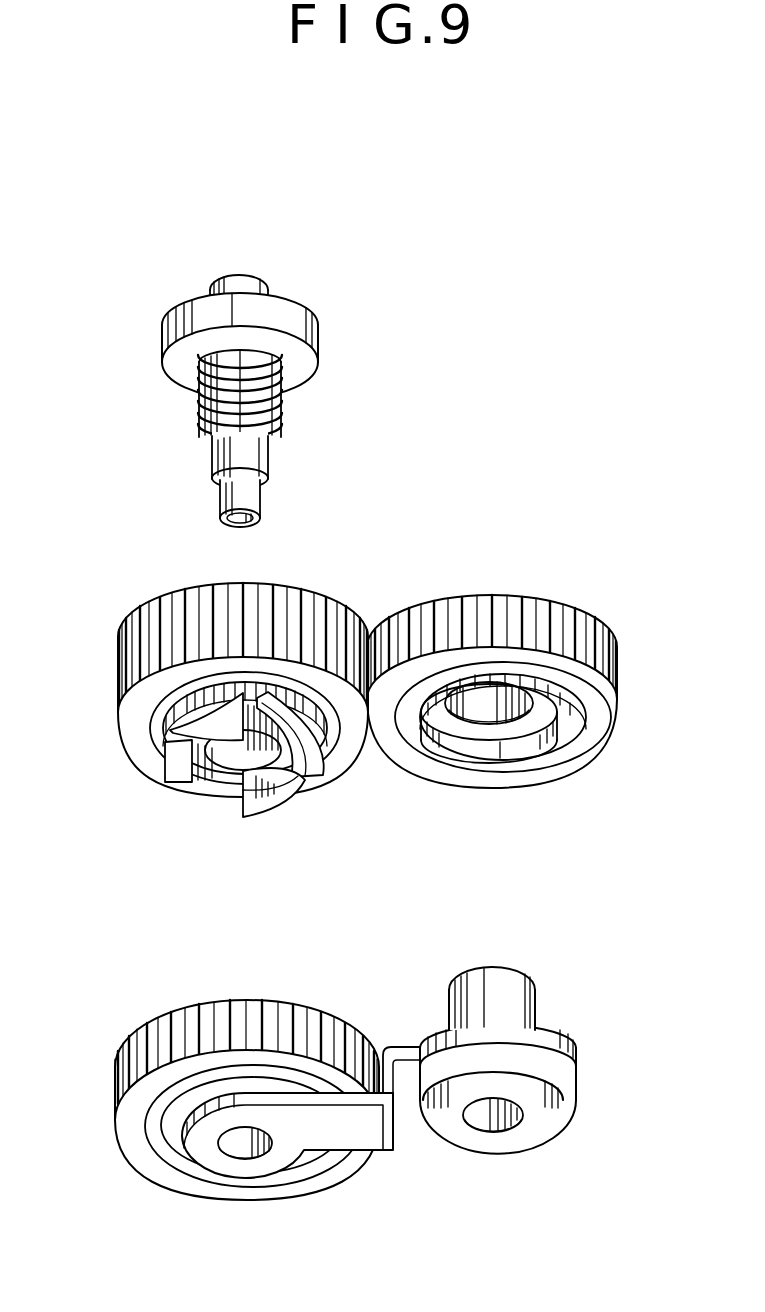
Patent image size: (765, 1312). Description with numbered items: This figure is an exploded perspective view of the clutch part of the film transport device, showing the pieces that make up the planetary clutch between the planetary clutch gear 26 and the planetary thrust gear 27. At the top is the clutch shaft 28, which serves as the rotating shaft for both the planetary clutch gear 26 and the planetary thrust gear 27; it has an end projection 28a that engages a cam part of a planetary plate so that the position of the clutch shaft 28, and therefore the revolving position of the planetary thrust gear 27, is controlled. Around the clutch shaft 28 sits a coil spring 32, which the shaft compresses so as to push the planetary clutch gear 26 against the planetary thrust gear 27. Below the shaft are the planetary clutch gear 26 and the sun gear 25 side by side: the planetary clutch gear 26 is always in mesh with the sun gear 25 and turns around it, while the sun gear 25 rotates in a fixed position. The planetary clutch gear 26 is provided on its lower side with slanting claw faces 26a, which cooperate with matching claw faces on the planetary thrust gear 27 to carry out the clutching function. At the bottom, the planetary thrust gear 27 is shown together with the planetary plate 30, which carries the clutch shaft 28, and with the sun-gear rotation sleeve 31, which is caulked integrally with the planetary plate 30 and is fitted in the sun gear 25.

The sun gear 25 is at (545, 612).
The planetary clutch gear 26 is at (205, 665).
The slanting claw faces 26a is at (183, 758).
The planetary thrust gear 27 is at (138, 1152).
The clutch shaft 28 is at (287, 360).
The end projection 28a is at (250, 285).
The planetary plate 30 is at (565, 1050).
The sun-gear rotation sleeve 31 is at (520, 998).
The coil spring 32 is at (282, 415).